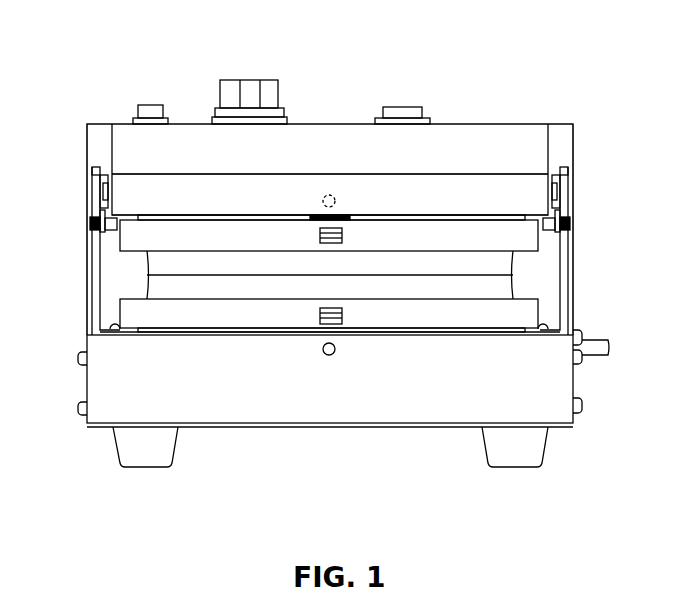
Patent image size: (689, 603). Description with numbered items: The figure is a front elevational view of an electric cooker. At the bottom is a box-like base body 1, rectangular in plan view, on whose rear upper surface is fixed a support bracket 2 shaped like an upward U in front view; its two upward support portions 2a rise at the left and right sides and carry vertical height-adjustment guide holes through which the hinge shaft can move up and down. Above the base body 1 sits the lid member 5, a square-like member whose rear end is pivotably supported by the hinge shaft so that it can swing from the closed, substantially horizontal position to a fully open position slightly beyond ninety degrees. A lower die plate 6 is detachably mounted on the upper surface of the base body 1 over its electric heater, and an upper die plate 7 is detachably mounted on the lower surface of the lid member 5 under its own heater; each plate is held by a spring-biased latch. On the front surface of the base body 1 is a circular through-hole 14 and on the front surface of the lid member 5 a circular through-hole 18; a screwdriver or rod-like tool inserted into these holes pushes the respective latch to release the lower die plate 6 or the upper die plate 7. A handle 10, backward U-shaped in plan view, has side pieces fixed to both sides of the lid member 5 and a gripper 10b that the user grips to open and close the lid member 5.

The base body 1 is at (575, 385).
The support bracket 2 is at (573, 262).
The upward support portion 2a is at (92, 290).
The lid member 5 is at (513, 125).
The lower die plate 6 is at (380, 285).
The upper die plate 7 is at (290, 265).
The handle 10 is at (435, 175).
The gripper 10b is at (192, 195).
The circular through-hole 14 is at (329, 357).
The circular through-hole 18 is at (329, 194).